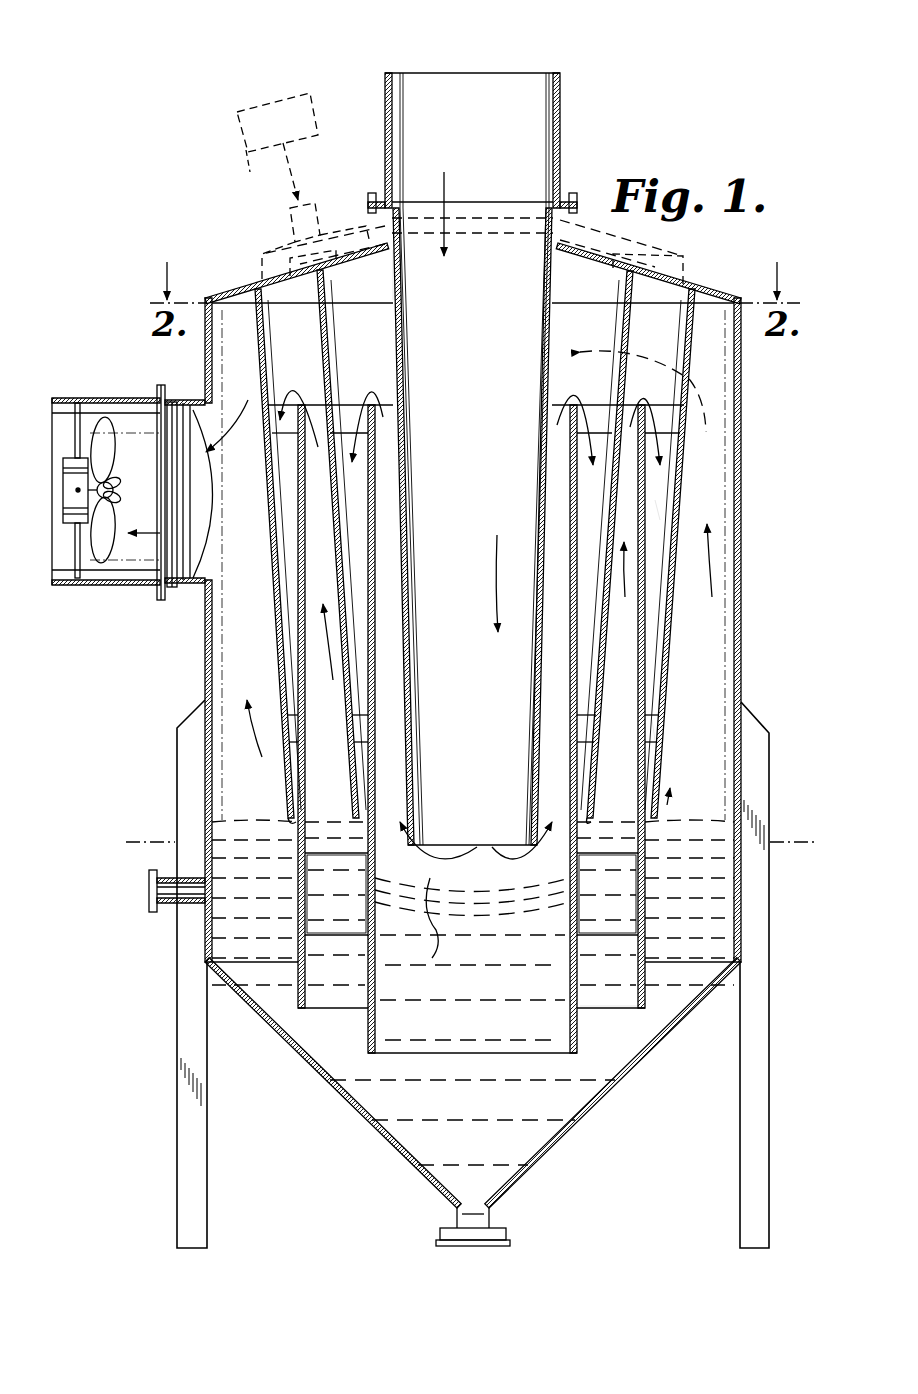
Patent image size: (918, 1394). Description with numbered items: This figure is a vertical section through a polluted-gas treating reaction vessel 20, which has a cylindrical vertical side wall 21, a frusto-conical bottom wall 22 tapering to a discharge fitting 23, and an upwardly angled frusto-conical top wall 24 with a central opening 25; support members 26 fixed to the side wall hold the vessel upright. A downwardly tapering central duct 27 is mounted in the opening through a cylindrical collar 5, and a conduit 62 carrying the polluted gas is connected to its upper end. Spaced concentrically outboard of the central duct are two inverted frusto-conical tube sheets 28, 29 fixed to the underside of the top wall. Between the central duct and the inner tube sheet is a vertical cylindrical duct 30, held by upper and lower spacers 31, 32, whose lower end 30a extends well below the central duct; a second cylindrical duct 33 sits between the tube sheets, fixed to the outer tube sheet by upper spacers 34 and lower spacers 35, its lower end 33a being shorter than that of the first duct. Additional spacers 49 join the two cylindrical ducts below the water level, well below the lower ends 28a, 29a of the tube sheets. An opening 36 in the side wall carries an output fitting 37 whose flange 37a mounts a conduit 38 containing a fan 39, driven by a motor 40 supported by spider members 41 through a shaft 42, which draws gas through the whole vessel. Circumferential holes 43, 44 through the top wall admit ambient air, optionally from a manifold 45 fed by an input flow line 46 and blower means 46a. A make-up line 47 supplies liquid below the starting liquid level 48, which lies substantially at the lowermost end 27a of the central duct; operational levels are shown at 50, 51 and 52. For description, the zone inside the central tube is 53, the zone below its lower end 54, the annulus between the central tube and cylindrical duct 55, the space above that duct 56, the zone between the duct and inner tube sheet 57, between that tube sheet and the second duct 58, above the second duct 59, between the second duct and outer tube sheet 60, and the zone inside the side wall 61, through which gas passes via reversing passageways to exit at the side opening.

The cylindrical collar 5 is at (381, 231).
The reaction vessel 20 is at (746, 460).
The side wall 21 is at (738, 526).
The bottom wall 22 is at (546, 1154).
The discharge fitting 23 is at (456, 1226).
The top wall 24 is at (708, 300).
The central opening 25 is at (396, 273).
The structural support members 26 is at (178, 1041).
The central duct 27 is at (551, 303).
The lowermost end of central duct 27a is at (468, 845).
The tube sheet 28 is at (333, 374).
The lower end of tube sheet 28a is at (366, 824).
The tube sheet 29 is at (268, 374).
The lower end of tube sheet 29a is at (292, 824).
The cylindrical duct 30 is at (568, 508).
The lower end of duct 30a is at (463, 1053).
The upper spacers 31 is at (608, 405).
The lower spacers 32 is at (590, 742).
The second cylindrical duct 33 is at (652, 512).
The lower end of second duct 33a is at (632, 1010).
The upper spacers 34 is at (664, 405).
The lower spacers 35 is at (656, 731).
The opening 36 is at (196, 570).
The output fitting 37 is at (172, 596).
The flange 37a is at (165, 392).
The conduit 38 is at (122, 397).
The fan 39 is at (110, 456).
The motor 40 is at (64, 520).
The spider members 41 is at (72, 447).
The shaft 42 is at (113, 495).
The openings 43 is at (386, 262).
The openings 44 is at (276, 268).
The manifold 45 is at (262, 258).
The input flow line 46 is at (320, 214).
The blower means 46a is at (320, 110).
The liquid make-up line 47 is at (160, 906).
The starting liquid level 48 is at (150, 840).
The spacers 49 is at (340, 933).
The operational liquid level 50 is at (440, 896).
The operational liquid level 51 is at (310, 790).
The operational liquid level 52 is at (232, 823).
The zone interior of central tube 53 is at (482, 617).
The zone below central tube 54 is at (418, 925).
The annulus 55 is at (404, 624).
The zone above duct 56 is at (388, 380).
The zone between duct and tube sheet 57 is at (397, 578).
The zone between tube sheet and duct 58 is at (306, 769).
The zone above second duct 59 is at (278, 352).
The zone between duct and tube sheet 60 is at (284, 557).
The outer zone 61 is at (214, 659).
The conduit 62 is at (393, 141).